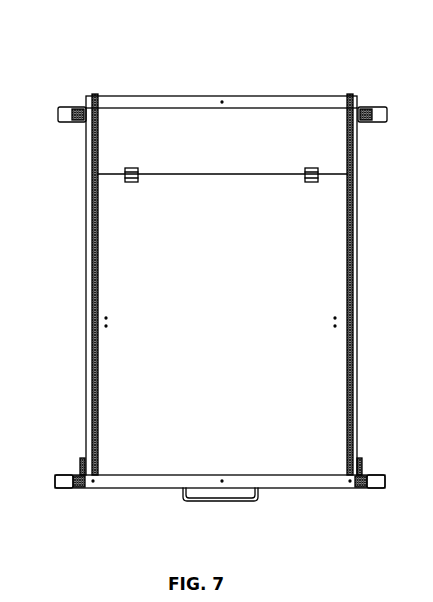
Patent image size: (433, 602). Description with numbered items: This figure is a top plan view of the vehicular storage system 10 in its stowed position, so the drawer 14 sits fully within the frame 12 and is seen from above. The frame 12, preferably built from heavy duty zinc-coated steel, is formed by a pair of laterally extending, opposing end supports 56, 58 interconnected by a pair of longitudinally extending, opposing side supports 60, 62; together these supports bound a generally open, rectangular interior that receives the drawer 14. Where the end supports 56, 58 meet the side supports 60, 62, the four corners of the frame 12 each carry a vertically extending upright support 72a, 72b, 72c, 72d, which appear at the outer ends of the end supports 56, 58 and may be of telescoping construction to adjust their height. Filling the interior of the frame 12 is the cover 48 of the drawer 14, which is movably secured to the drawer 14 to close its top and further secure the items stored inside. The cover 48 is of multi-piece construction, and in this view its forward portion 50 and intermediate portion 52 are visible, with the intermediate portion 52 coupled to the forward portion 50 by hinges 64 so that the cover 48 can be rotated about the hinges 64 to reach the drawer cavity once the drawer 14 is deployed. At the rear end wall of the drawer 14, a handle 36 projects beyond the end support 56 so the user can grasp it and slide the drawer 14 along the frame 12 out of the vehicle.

The vehicular storage system 10 is at (311, 68).
The frame 12 is at (126, 511).
The drawer 14 is at (126, 420).
The handle 36 is at (221, 500).
The cover 48 is at (118, 278).
The forward portion 50 is at (118, 145).
The intermediate portion 52 is at (230, 333).
The end support 56 is at (170, 480).
The end support 58 is at (196, 100).
The side support 60 is at (355, 358).
The side support 62 is at (87, 347).
The hinge 64 is at (131, 183).
The upright support 72a is at (62, 483).
The upright support 72b is at (376, 483).
The upright support 72c is at (388, 117).
The upright support 72d is at (62, 117).